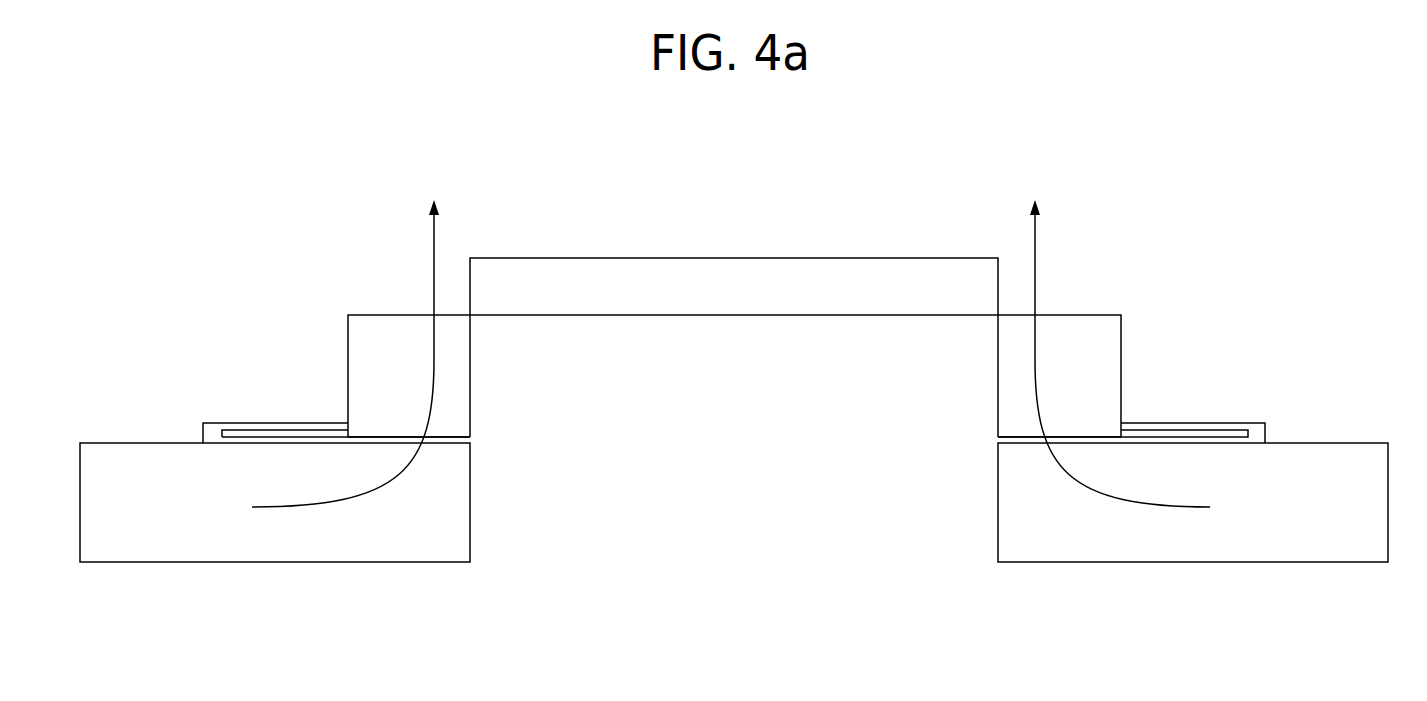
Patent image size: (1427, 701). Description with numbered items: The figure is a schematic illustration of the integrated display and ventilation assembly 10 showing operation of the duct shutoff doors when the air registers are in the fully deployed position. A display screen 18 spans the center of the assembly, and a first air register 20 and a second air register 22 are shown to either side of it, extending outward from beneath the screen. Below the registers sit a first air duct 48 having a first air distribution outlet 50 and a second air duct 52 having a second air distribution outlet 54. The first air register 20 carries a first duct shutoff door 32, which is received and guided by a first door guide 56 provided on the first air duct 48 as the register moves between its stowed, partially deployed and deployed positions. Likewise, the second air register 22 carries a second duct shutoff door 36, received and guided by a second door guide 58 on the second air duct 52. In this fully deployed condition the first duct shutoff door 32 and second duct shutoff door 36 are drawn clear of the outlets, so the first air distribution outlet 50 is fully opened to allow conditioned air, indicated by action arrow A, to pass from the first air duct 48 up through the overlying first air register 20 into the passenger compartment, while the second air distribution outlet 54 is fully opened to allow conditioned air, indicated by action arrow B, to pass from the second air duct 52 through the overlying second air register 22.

The integrated display and ventilation assembly 10 is at (1103, 156).
The display screen 18 is at (742, 258).
The first air register 20 is at (387, 315).
The second air register 22 is at (1070, 315).
The first duct shutoff door 32 is at (248, 437).
The second duct shutoff door 36 is at (1197, 435).
The first air duct 48 is at (188, 526).
The first air distribution outlet 50 is at (388, 437).
The second air duct 52 is at (1230, 526).
The second air distribution outlet 54 is at (1063, 437).
The first door guide 56 is at (205, 435).
The second door guide 58 is at (1262, 433).
The action arrow A is at (407, 465).
The action arrow B is at (1057, 477).